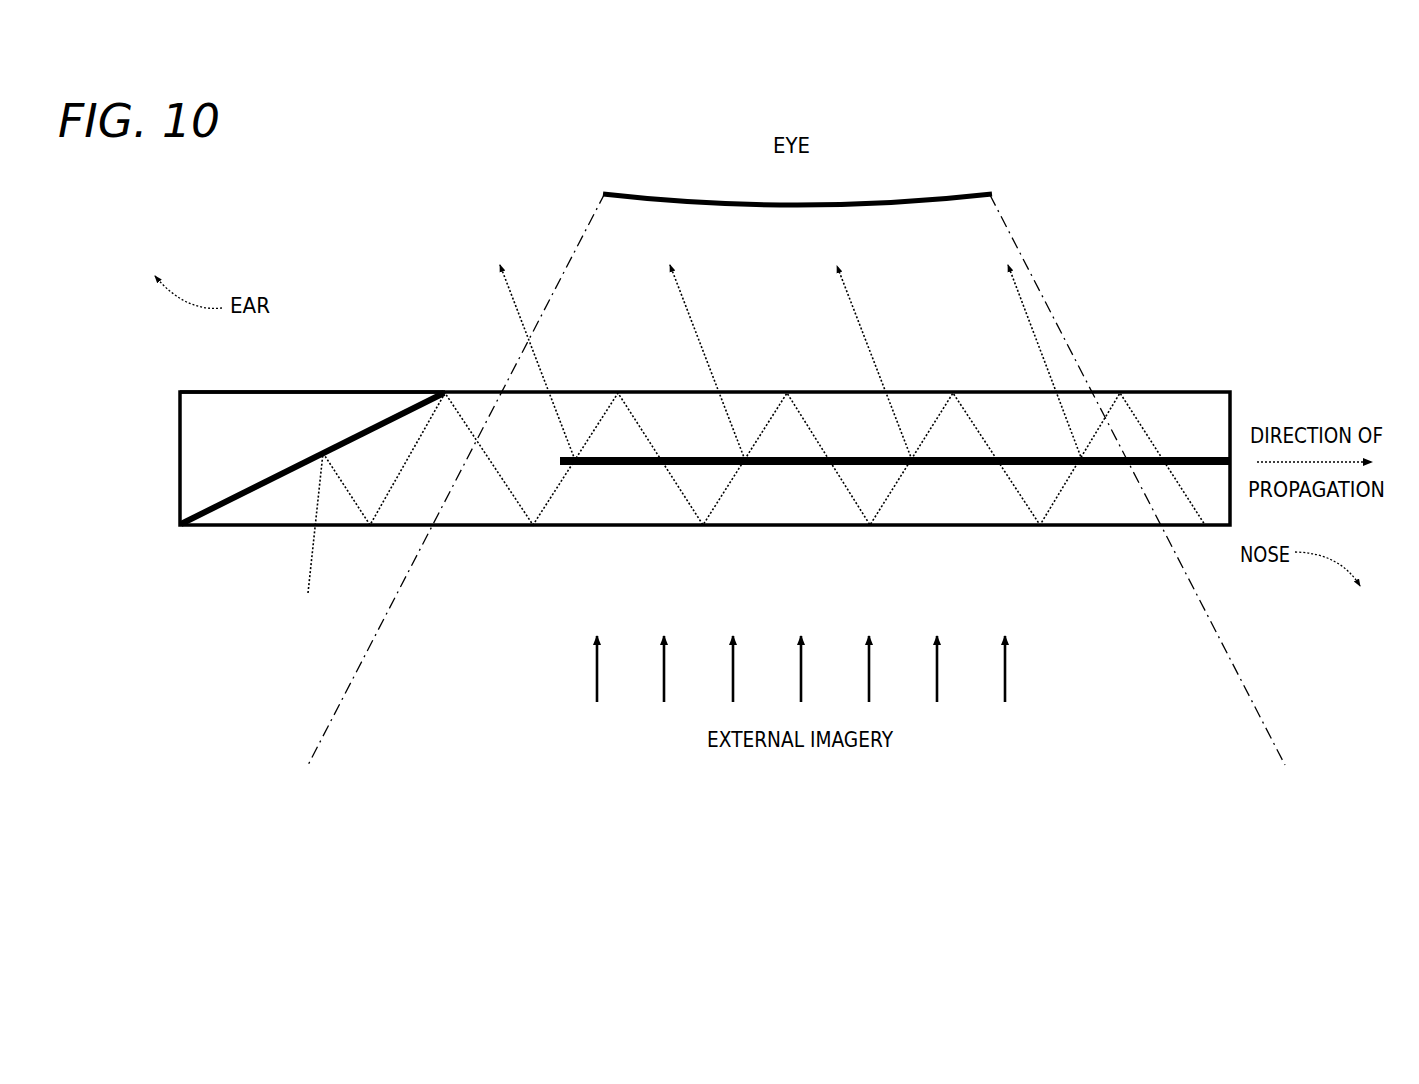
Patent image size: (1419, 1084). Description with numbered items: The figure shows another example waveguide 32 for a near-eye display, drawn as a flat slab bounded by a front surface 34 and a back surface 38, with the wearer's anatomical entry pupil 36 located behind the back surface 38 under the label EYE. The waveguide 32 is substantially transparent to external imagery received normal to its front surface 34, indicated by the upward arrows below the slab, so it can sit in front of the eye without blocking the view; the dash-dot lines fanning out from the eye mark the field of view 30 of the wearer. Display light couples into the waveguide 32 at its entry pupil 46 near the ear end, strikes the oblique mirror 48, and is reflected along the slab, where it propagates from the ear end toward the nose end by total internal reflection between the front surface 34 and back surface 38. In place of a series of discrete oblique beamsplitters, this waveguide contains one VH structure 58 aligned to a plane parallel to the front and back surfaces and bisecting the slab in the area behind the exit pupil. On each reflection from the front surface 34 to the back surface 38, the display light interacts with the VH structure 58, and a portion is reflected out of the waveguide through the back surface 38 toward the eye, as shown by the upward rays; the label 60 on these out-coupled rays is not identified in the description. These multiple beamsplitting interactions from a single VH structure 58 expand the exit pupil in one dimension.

The field of view 30 is at (333, 718).
The waveguide 32 is at (1263, 362).
The front surface 34 is at (507, 550).
The anatomical entry pupil 36 is at (895, 205).
The back surface 38 is at (381, 368).
The entry pupil 46 is at (303, 510).
The mirror 48 is at (262, 482).
The VH structure 58 is at (602, 468).
The out-coupled light rays 60 is at (812, 375).